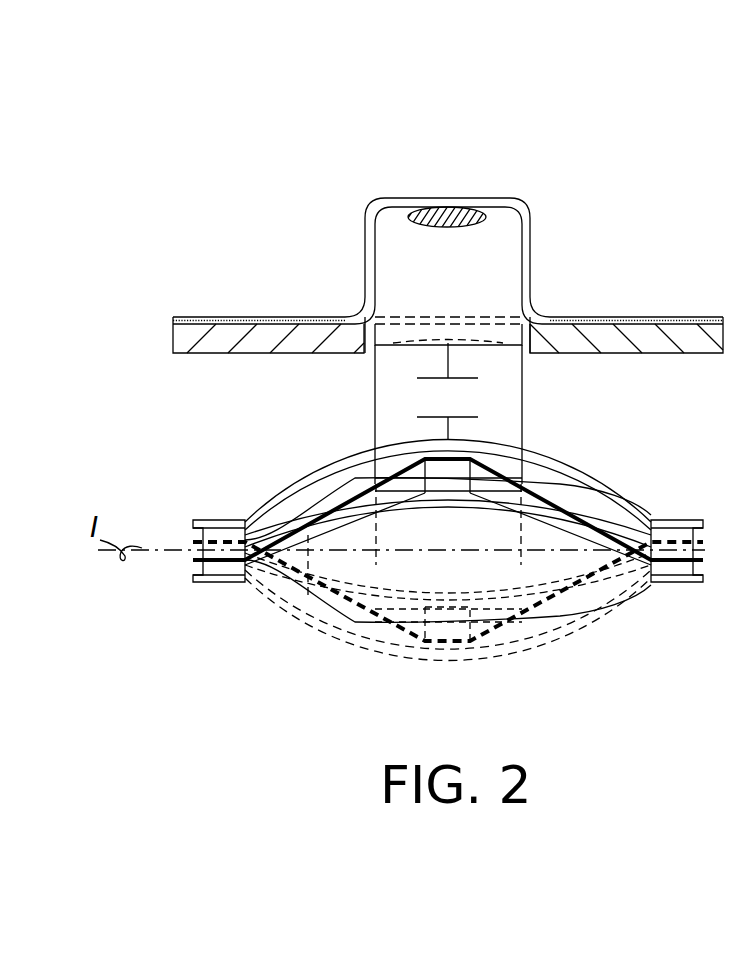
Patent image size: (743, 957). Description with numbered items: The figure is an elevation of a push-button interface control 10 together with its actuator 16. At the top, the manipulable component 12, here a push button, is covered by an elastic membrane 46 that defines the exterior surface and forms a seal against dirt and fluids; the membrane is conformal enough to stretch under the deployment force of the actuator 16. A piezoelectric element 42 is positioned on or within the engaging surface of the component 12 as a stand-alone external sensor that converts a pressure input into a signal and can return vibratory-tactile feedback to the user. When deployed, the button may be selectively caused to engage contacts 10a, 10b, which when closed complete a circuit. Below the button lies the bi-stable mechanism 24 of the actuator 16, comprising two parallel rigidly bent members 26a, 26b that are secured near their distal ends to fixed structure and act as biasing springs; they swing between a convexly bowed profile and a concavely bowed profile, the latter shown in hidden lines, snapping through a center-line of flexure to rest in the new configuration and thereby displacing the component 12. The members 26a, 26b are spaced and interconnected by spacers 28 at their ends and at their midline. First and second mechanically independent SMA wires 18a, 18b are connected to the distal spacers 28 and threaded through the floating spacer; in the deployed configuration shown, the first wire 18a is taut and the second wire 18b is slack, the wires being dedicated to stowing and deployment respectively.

The control 10 is at (292, 170).
The manipulable component 12 is at (472, 288).
The piezoelectric element 42 is at (470, 213).
The elastic membrane 46 is at (238, 318).
The contact 10a is at (448, 364).
The contact 10b is at (448, 427).
The spacers 28 is at (194, 520).
The first rigidly bent member 26a is at (370, 450).
The second rigidly bent member 26b is at (586, 540).
The first SMA wire 18a is at (430, 476).
The second SMA wire 18b is at (612, 512).
The actuator 16 is at (300, 652).
The bi-stable mechanism 24 is at (473, 656).